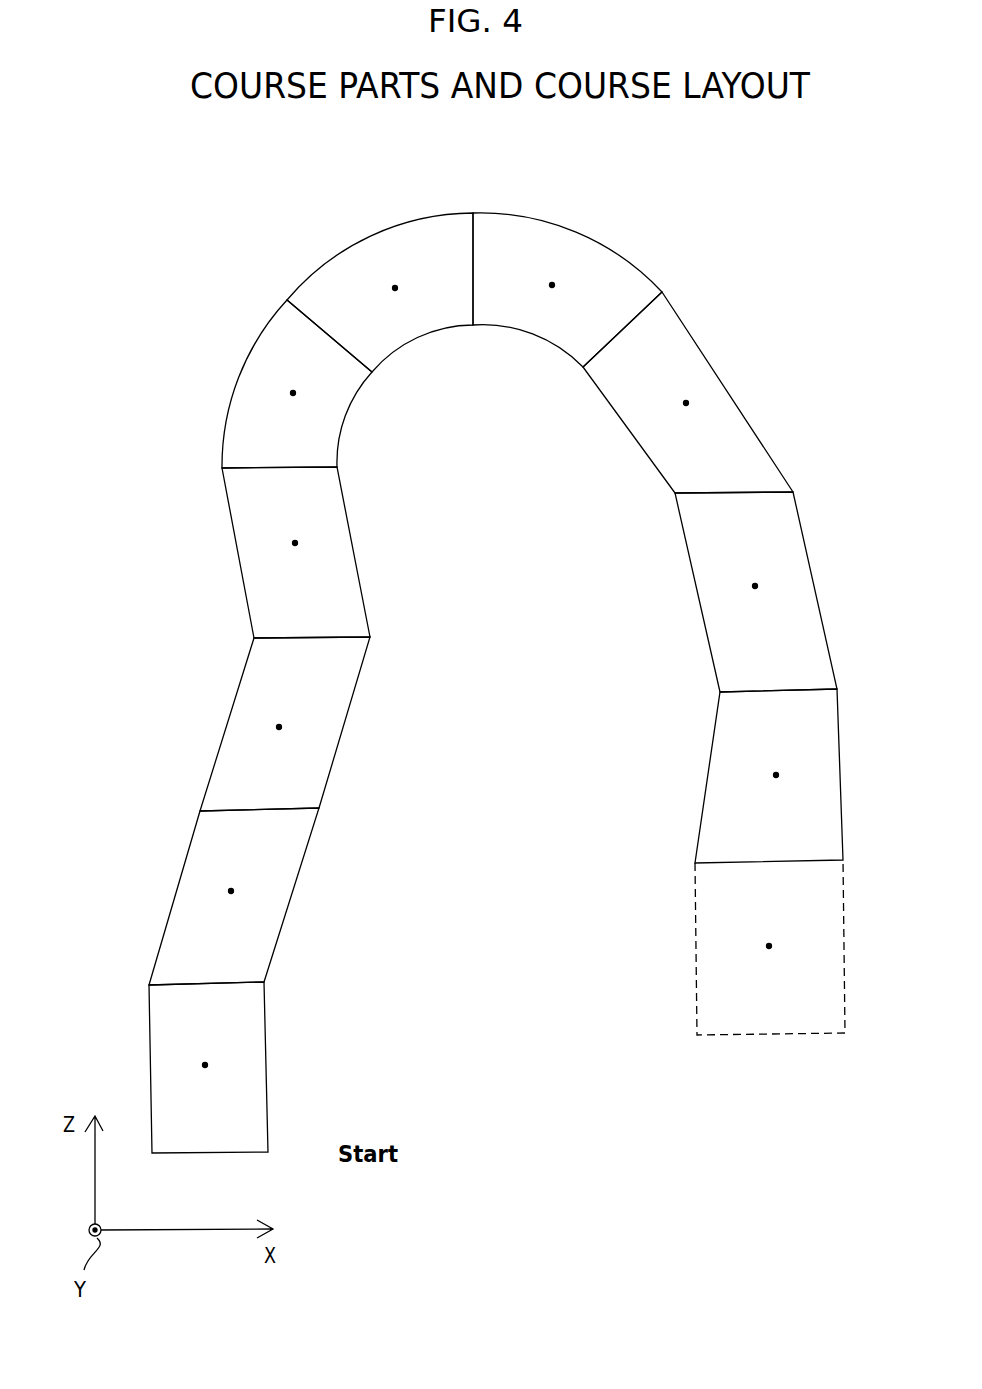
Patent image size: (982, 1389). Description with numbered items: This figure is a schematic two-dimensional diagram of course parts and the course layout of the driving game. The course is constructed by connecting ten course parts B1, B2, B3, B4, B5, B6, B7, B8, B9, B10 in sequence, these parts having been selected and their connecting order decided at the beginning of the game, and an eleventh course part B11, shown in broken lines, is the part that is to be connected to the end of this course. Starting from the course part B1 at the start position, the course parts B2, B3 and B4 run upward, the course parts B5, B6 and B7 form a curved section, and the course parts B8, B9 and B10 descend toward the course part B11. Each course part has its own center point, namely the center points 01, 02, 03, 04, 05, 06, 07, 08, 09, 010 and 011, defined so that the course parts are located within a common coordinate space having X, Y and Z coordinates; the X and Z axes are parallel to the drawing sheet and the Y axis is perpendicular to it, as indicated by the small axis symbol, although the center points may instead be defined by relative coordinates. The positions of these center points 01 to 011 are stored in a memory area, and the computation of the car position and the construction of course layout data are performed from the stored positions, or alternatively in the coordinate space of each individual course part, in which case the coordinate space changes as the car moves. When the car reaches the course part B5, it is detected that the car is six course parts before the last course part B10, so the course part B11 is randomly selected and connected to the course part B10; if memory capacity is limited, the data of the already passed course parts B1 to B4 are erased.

The course part B1 is at (187, 1067).
The course part B2 is at (227, 896).
The course part B3 is at (272, 724).
The course part B4 is at (286, 552).
The course part B5 is at (292, 384).
The course part B6 is at (380, 290).
The course part B7 is at (567, 283).
The course part B8 is at (688, 392).
The course part B9 is at (762, 592).
The course part B10 is at (792, 776).
The course part B11 is at (792, 947).
The center point 01 is at (206, 1082).
The center point 02 is at (229, 911).
The center point 03 is at (281, 746).
The center point 04 is at (297, 561).
The center point 05 is at (292, 411).
The center point 06 is at (394, 304).
The center point 07 is at (554, 301).
The center point 08 is at (687, 422).
The center point 09 is at (755, 602).
The center point 010 is at (778, 791).
The center point 011 is at (774, 965).